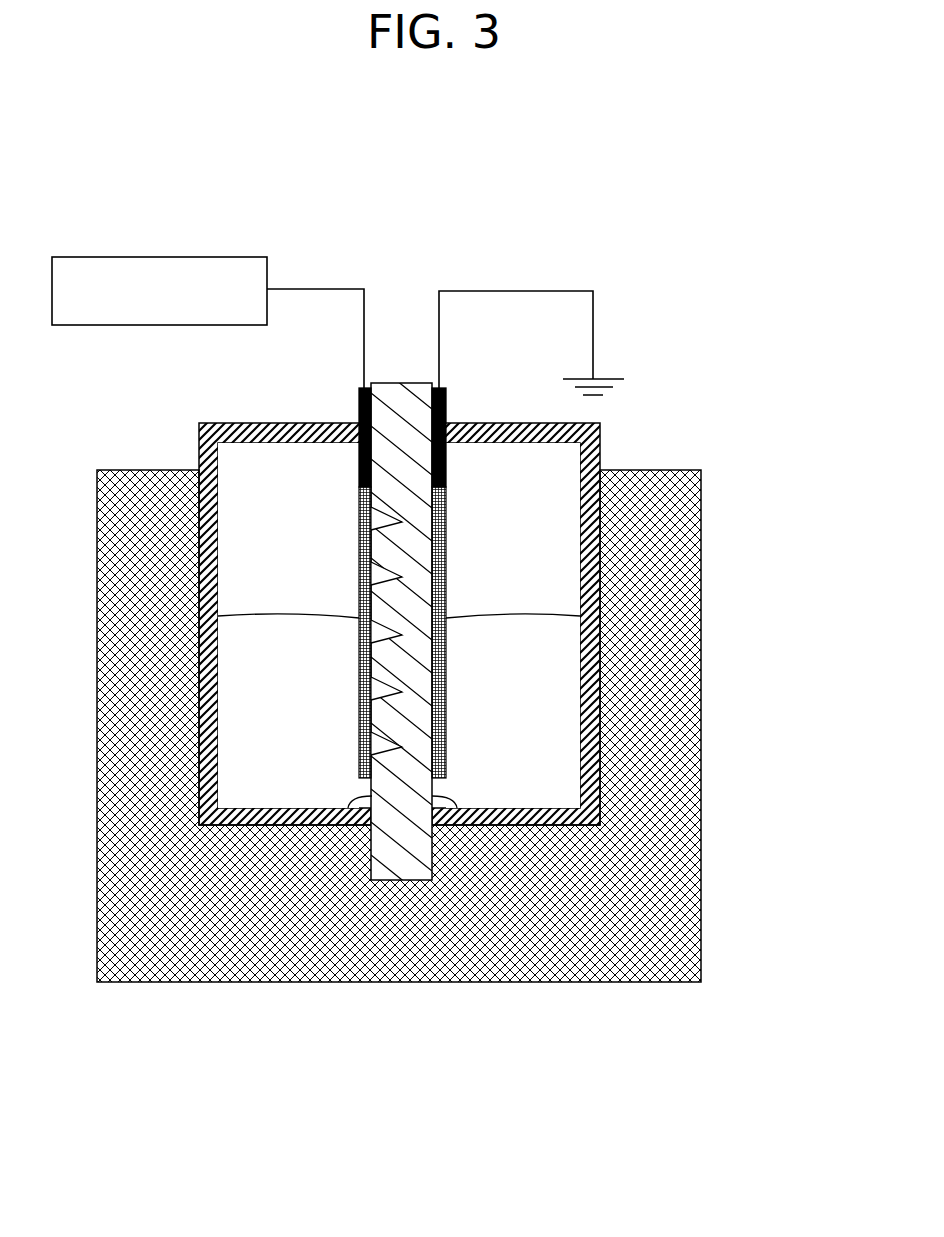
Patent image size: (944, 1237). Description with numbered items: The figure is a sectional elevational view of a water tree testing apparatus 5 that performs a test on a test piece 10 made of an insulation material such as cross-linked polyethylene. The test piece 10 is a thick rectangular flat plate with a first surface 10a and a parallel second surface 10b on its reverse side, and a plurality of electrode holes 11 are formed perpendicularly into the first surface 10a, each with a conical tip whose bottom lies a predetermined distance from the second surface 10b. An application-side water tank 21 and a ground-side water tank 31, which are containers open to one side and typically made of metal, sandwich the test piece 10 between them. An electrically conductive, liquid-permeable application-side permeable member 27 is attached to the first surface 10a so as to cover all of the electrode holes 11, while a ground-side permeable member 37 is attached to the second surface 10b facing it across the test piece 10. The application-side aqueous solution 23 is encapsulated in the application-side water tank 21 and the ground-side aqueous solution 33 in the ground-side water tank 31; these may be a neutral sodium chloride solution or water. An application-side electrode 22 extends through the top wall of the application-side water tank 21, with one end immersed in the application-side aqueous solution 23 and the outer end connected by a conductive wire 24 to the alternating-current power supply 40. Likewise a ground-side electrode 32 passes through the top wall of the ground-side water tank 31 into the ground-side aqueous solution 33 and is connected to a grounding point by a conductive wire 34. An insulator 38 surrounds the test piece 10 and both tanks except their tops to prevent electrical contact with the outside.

The testing apparatus 5 is at (652, 202).
The test piece 10 is at (405, 383).
The first surface 10a is at (333, 825).
The second surface 10b is at (470, 825).
The electrode holes 11 is at (402, 692).
The application-side water tank 21 is at (278, 422).
The application-side electrode 22 is at (359, 413).
The application-side aqueous solution 23 is at (235, 490).
The conductive wire 24 is at (315, 289).
The application-side permeable member 27 is at (200, 618).
The ground-side water tank 31 is at (553, 425).
The ground-side electrode 32 is at (446, 419).
The ground-side aqueous solution 33 is at (570, 482).
The conductive wire 34 is at (500, 291).
The ground-side permeable member 37 is at (600, 617).
The insulator 38 is at (181, 970).
The alternating-current power supply 40 is at (140, 257).